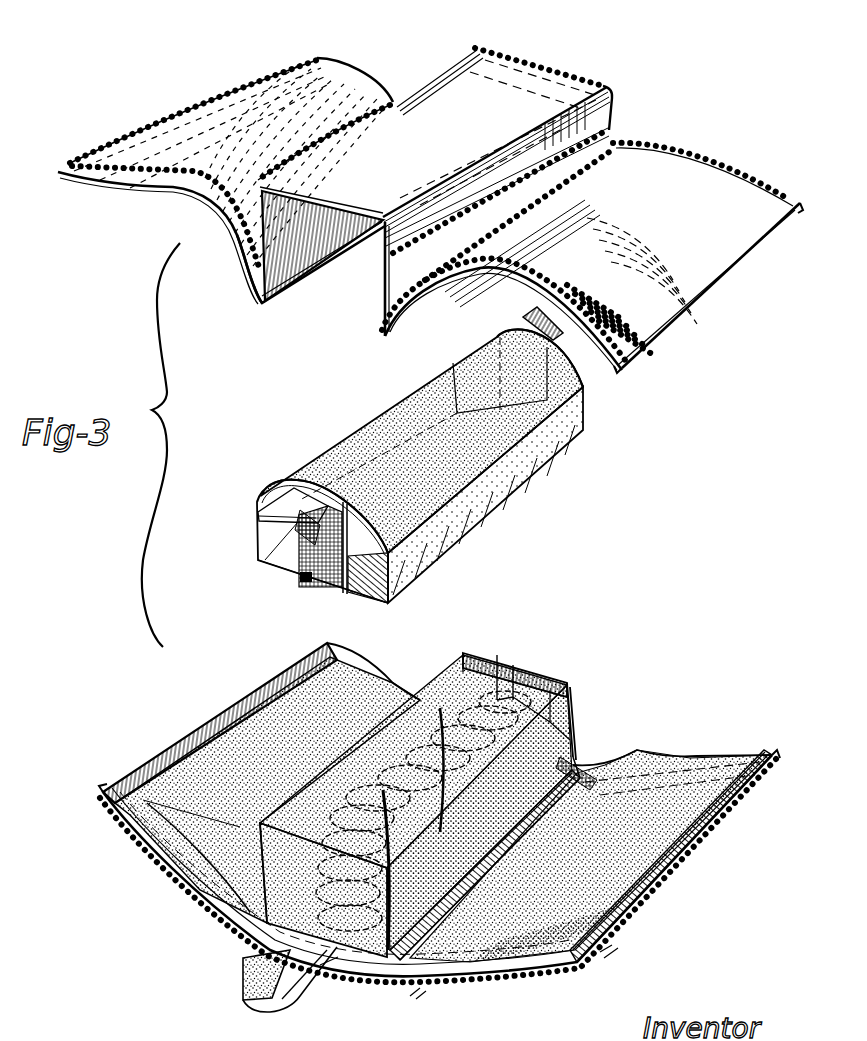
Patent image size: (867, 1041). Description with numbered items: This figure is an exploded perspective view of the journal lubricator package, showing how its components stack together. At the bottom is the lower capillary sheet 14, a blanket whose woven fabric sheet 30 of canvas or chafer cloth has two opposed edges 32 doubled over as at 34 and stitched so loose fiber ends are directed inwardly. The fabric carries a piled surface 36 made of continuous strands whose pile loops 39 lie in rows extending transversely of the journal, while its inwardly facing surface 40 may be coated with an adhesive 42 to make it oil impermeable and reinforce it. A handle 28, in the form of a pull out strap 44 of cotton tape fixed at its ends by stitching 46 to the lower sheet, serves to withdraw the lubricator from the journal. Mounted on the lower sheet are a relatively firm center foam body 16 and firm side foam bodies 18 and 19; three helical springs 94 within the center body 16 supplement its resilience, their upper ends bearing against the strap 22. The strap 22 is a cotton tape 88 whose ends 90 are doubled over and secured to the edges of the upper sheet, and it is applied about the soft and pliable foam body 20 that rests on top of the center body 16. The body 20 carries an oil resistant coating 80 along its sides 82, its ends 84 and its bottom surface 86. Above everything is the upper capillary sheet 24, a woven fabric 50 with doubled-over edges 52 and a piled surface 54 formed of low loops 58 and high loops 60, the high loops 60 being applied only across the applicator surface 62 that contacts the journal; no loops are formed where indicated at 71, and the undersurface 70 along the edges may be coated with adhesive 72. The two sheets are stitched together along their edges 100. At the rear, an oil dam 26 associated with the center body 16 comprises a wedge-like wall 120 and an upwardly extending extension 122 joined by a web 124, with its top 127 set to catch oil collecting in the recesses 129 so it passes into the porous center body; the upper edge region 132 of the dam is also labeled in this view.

The lower capillary sheet 14 is at (441, 831).
The center foam body 16 is at (573, 731).
The side foam body 18 is at (420, 796).
The side foam body 19 is at (591, 839).
The soft foam body 20 is at (434, 468).
The strap 22 is at (306, 587).
The upper capillary sheet 24 is at (595, 289).
The oil dam 26 is at (527, 706).
The handle 28 is at (270, 993).
The woven fabric sheet 30 is at (722, 822).
The opposed edges 32 is at (115, 785).
The doubled-over portion 34 is at (775, 754).
The piled surface 36 is at (556, 982).
The pile loops 39 is at (618, 950).
The inwardly facing surface 40 is at (261, 783).
The adhesive 42 is at (185, 735).
The pull out strap 44 is at (300, 1010).
The stitching 46 is at (320, 978).
The woven fabric 50 is at (740, 254).
The edges 52 is at (802, 214).
The piled surface 54 is at (149, 118).
The low loops 58 is at (75, 165).
The high loops 60 is at (516, 47).
The applicator surface 62 is at (467, 78).
The undersurface 70 is at (308, 288).
The loop-free region 71 is at (400, 288).
The adhesive 72 is at (328, 253).
The oil resistant coating 80 is at (372, 595).
The sides 82 is at (280, 485).
The ends 84 is at (258, 511).
The bottom surface 86 is at (425, 572).
The cotton tape 88 is at (330, 592).
The tape ends 90 is at (530, 318).
The helical springs 94 is at (356, 800).
The edges 100 is at (670, 326).
The wedge-like wall 120 is at (580, 711).
The extension 122 is at (572, 690).
The web 124 is at (500, 712).
The top 127 is at (552, 682).
The recesses 129 is at (467, 671).
The partition top edge 132 is at (492, 660).